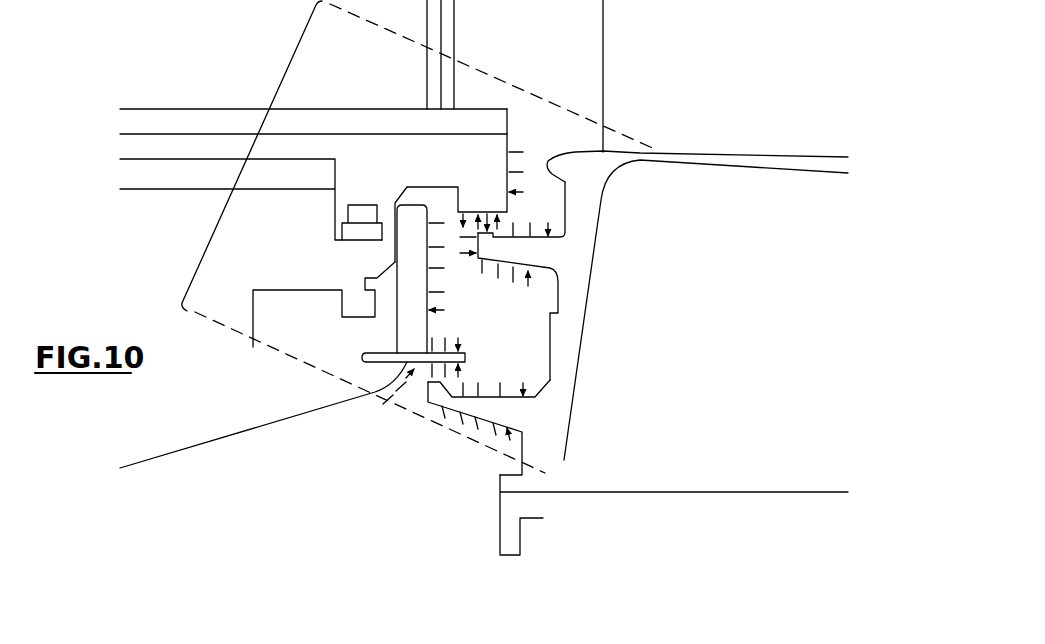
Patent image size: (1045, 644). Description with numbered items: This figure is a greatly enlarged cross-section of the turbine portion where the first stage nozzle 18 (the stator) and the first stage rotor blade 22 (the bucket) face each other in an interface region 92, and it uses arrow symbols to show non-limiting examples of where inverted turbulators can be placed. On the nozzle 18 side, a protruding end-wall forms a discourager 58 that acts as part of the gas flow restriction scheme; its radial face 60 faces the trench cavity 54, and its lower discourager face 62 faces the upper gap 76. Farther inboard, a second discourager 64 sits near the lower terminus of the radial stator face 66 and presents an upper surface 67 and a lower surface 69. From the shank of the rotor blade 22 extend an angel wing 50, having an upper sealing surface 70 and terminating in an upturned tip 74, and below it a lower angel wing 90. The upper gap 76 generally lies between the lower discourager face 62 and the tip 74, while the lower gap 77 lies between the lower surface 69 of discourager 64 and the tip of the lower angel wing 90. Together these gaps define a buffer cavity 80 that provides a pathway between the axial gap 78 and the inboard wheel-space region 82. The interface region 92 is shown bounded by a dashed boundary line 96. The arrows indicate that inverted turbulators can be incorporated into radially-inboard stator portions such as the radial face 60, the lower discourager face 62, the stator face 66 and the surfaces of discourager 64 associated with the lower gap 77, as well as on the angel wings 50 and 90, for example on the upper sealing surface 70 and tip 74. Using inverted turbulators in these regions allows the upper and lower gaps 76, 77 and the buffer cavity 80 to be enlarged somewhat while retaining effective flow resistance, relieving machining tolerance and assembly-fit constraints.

The first stage nozzle 18 is at (264, 58).
The interface region 92 is at (247, 158).
The axial gap 78 is at (517, 46).
The first stage rotor blade 22 is at (723, 76).
The discourager 58 is at (405, 180).
The lower discourager face 62 is at (460, 219).
The upper surface 67 is at (442, 348).
The discourager 64 is at (368, 368).
The trench cavity 54 is at (528, 207).
The angel wing 50 is at (534, 264).
The upper sealing surface 70 is at (567, 231).
The upper gap 76 is at (500, 221).
The radial face 60 is at (510, 163).
The tip 74 is at (497, 213).
The radial stator face 66 is at (430, 258).
The buffer cavity 80 is at (487, 340).
The lower gap 77 is at (470, 375).
The lower surface 69 is at (425, 363).
The lower angel wing 90 is at (528, 431).
The dashed boundary line 96 is at (463, 442).
The wheel-space region 82 is at (340, 572).